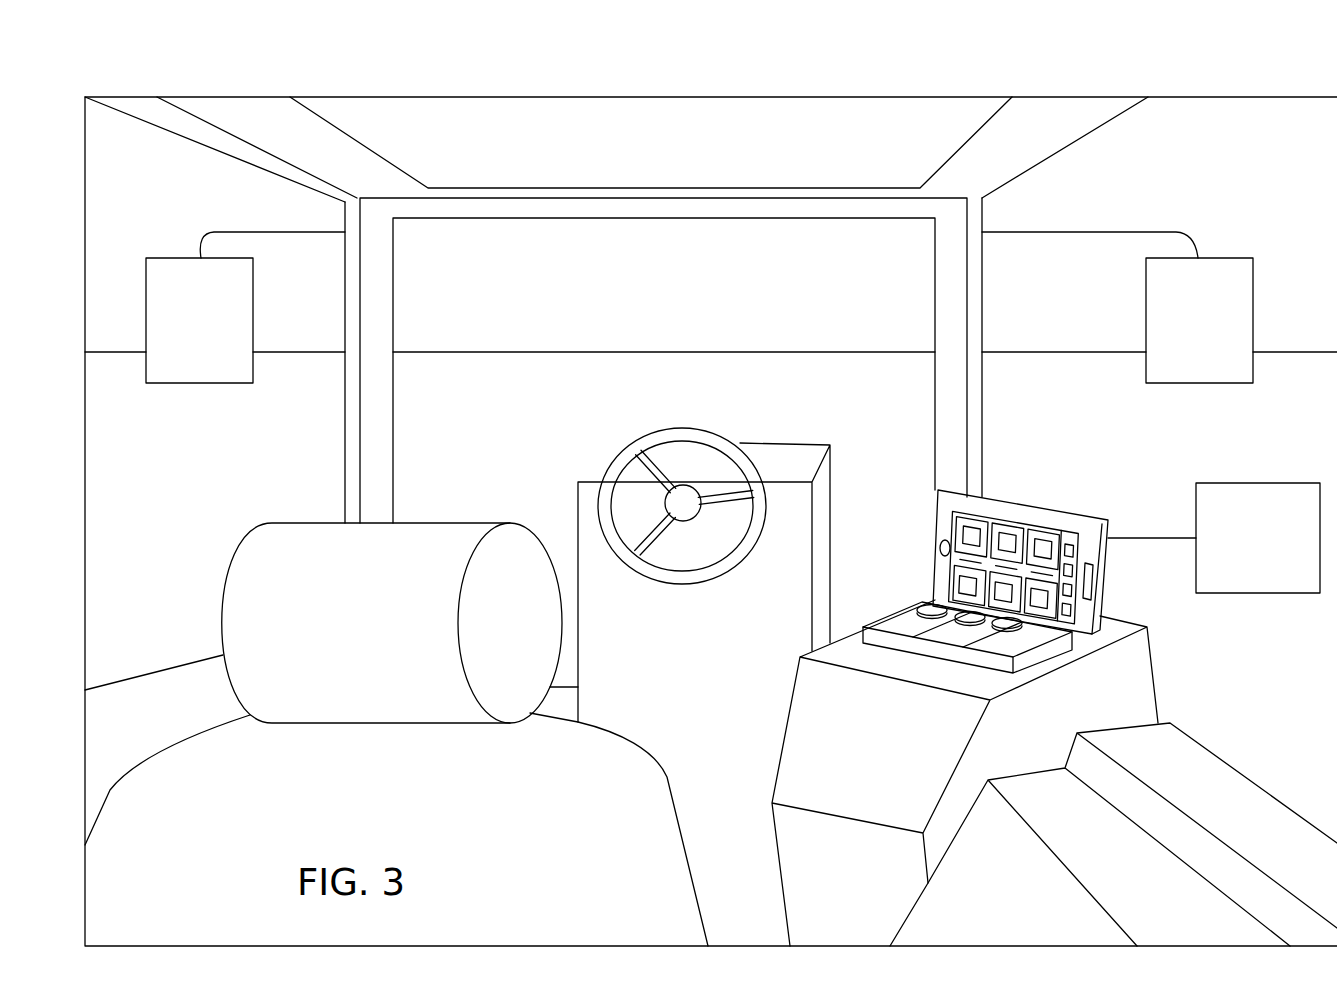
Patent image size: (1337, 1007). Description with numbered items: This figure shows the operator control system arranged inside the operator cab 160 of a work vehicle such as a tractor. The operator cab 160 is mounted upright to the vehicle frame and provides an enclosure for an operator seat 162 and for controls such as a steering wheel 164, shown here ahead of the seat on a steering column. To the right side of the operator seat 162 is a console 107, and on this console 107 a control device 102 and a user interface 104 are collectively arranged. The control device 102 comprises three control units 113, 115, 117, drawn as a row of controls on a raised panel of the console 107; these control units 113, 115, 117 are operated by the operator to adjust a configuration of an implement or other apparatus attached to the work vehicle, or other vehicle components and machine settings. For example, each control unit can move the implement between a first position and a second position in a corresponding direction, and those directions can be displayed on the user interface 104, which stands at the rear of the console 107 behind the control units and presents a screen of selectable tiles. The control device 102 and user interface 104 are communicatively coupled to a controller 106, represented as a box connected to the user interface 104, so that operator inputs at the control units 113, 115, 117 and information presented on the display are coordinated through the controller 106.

The operator cab 160 is at (548, 97).
The operator seat 162 is at (238, 548).
The steering wheel 164 is at (662, 430).
The control device 102 is at (939, 636).
The user interface 104 is at (1015, 492).
The controller 106 is at (1235, 551).
The console 107 is at (1123, 692).
The control unit 113 is at (925, 608).
The control unit 115 is at (963, 618).
The control unit 117 is at (998, 628).